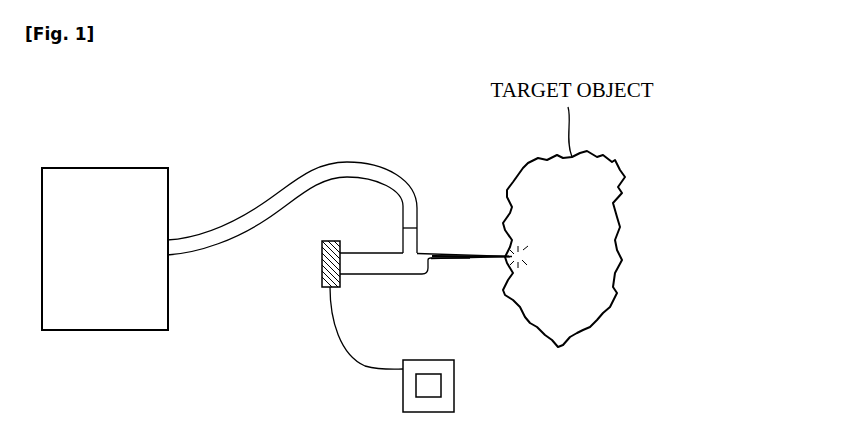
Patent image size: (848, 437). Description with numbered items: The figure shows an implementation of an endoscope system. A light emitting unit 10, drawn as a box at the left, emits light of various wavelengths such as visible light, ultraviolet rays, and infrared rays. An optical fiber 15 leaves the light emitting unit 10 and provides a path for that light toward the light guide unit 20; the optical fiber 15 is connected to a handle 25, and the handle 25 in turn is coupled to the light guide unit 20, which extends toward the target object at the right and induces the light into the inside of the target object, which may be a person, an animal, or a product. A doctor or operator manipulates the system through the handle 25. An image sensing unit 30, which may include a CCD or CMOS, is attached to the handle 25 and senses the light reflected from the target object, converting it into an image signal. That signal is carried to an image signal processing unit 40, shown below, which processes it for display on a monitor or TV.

The light emitting unit 10 is at (103, 168).
The optical fiber 15 is at (353, 161).
The light guide unit 20 is at (465, 253).
The handle 25 is at (382, 276).
The image sensing unit 30 is at (322, 273).
The image signal processing unit 40 is at (454, 392).